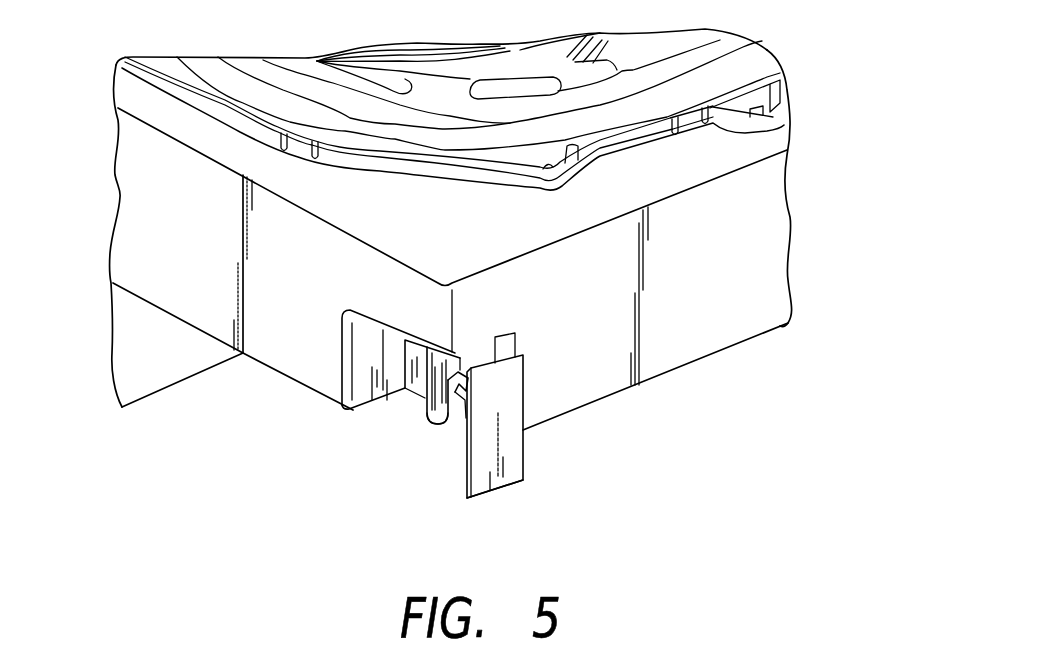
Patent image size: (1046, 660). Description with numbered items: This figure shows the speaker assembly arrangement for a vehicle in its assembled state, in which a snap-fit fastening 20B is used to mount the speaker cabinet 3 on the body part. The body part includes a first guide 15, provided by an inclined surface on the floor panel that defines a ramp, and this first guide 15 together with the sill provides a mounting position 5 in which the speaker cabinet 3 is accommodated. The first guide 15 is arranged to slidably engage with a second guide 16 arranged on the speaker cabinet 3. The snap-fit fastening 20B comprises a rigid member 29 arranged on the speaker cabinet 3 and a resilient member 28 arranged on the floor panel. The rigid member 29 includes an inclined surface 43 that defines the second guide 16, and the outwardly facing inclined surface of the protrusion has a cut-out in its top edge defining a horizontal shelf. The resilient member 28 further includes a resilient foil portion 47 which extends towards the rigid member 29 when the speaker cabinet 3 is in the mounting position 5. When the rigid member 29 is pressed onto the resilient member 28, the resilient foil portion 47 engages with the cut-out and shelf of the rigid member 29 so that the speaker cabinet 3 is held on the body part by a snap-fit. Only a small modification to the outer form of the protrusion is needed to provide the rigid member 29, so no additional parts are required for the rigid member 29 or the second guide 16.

The speaker cabinet 3 is at (795, 222).
The mounting position 5 is at (607, 398).
The first guide 15 is at (523, 358).
The second guide 16 is at (458, 406).
The snap-fit fastening 20B is at (377, 487).
The resilient member 28 is at (523, 482).
The rigid member 29 is at (423, 412).
The inclined surface 43 is at (461, 414).
The resilient foil portion 47 is at (457, 378).